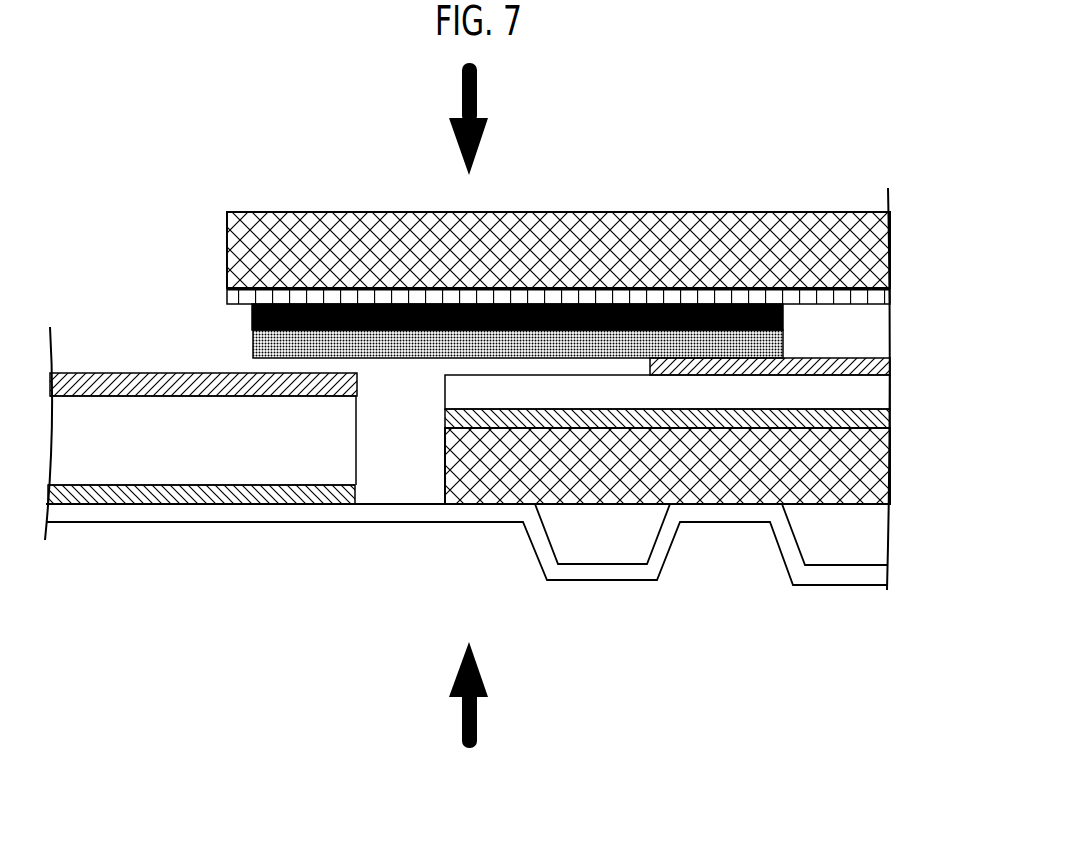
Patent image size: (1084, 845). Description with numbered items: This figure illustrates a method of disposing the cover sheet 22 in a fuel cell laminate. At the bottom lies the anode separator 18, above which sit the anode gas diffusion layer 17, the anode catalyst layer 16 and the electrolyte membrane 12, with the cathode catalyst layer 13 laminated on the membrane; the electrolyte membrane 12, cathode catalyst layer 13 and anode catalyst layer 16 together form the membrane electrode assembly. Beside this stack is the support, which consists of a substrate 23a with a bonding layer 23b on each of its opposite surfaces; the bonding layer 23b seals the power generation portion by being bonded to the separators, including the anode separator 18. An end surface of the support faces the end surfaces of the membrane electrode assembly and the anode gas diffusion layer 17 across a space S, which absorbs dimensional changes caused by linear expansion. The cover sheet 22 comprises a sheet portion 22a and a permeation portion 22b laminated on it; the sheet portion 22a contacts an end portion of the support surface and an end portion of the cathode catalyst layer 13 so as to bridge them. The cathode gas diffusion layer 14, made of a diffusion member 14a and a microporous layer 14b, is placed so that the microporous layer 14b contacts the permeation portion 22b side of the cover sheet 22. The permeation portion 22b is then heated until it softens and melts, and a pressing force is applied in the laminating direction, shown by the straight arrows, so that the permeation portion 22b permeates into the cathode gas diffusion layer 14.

The electrolyte membrane 12 is at (882, 395).
The cathode catalyst layer 13 is at (835, 366).
The cathode gas diffusion layer 14 is at (593, 233).
The diffusion member 14a is at (881, 250).
The microporous layer 14b is at (883, 300).
The anode catalyst layer 16 is at (882, 425).
The anode gas diffusion layer 17 is at (882, 468).
The anode separator 18 is at (875, 574).
The cover sheet 22 is at (450, 321).
The sheet portion 22a is at (252, 348).
The permeation portion 22b is at (252, 322).
The substrate 23a is at (183, 458).
The bonding layer 23b is at (102, 386).
The space S is at (393, 487).